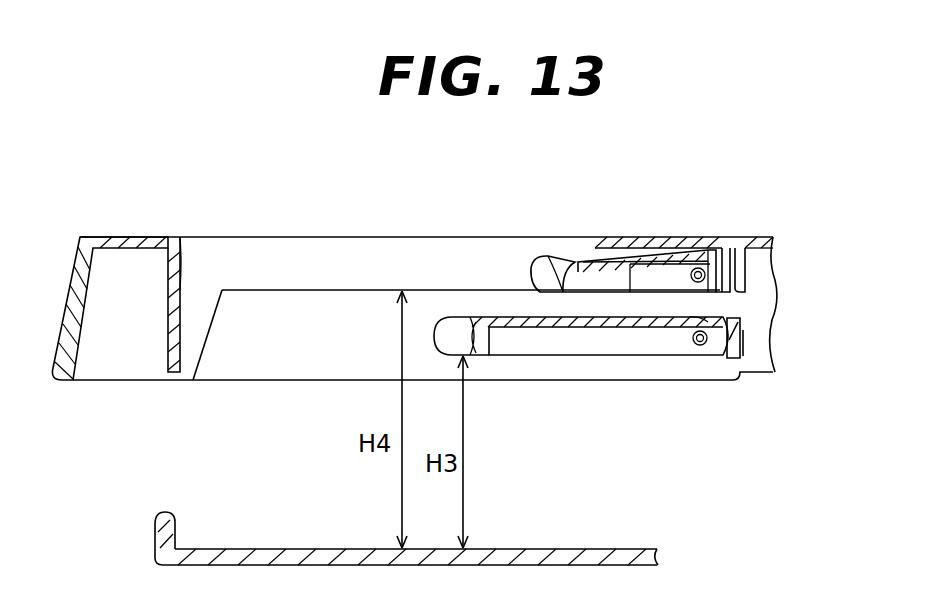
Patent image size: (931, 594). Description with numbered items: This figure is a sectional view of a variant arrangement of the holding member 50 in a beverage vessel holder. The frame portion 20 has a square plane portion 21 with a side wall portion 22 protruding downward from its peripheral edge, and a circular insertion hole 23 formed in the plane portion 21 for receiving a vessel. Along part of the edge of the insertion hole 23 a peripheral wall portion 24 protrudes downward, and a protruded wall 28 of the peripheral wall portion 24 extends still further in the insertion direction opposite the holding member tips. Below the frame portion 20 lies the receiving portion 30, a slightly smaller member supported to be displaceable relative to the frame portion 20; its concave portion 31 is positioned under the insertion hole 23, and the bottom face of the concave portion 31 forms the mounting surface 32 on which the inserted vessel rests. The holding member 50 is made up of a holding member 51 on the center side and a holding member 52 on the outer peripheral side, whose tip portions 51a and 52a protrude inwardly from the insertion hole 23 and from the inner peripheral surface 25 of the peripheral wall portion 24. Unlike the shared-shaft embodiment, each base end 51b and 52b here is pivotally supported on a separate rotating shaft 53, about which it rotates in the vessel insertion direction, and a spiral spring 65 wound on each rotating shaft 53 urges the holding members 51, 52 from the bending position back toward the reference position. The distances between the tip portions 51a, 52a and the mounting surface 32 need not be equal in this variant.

The frame portion 20 is at (112, 234).
The plane portion 21 is at (158, 234).
The side wall portion 22 is at (114, 381).
The insertion hole 23 is at (183, 246).
The peripheral wall portion 24 is at (320, 235).
The inner peripheral surface 25 is at (300, 292).
The protruded wall 28 is at (205, 344).
The receiving portion 30 is at (238, 547).
The concave portion 31 is at (330, 547).
The mounting surface 32 is at (548, 548).
The holding member 50 is at (467, 208).
The holding member on the center side 51 is at (498, 316).
The tip portion 51a is at (456, 318).
The base end 51b is at (668, 328).
The holding member on the outer peripheral side 52 is at (596, 258).
The tip portion 52a is at (546, 258).
The base end 52b is at (716, 250).
The rotating shaft 53 is at (658, 249).
The spiral spring 65 is at (748, 265).